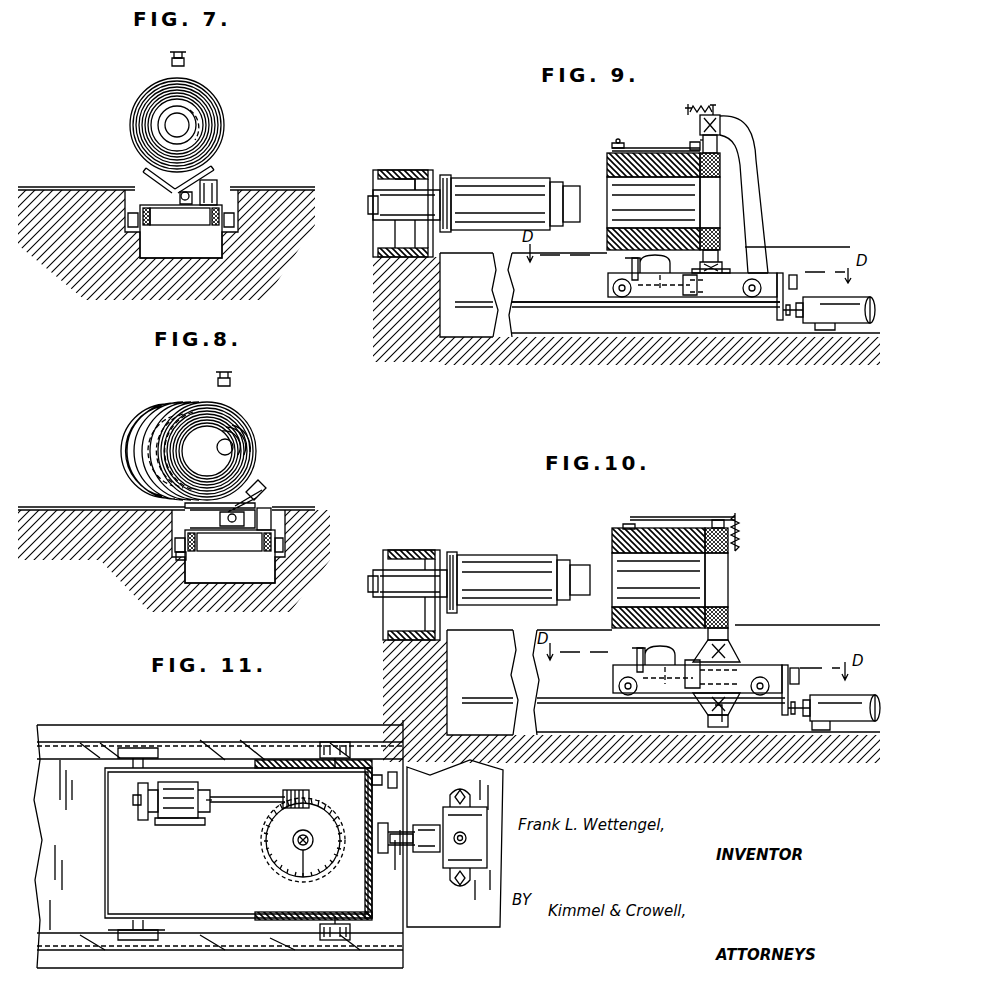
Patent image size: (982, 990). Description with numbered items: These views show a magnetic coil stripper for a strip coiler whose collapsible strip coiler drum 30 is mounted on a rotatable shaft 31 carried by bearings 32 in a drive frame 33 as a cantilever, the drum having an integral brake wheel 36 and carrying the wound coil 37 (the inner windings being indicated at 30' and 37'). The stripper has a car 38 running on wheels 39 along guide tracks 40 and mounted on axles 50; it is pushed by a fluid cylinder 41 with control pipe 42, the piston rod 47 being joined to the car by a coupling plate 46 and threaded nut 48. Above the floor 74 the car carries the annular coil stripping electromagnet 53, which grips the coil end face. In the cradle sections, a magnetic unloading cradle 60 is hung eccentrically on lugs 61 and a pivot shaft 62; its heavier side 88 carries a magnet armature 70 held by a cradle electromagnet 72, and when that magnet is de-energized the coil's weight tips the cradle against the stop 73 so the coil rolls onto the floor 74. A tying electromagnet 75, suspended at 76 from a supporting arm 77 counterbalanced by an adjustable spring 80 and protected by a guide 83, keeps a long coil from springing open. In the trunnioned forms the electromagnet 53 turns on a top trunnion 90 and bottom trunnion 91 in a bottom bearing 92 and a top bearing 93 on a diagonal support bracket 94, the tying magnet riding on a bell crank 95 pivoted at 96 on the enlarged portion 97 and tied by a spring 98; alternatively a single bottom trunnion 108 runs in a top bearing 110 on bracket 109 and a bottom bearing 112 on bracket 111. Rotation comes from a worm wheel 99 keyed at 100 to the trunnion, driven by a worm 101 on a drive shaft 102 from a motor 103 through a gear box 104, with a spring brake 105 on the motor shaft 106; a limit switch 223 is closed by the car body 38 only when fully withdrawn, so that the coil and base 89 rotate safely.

In FIG. 7, the collapsible strip coiler drum 30 is at (211, 130).
In FIG. 8, the collapsible strip coiler drum 30 is at (260, 442).
In FIG. 9, the collapsible strip coiler drum 30 is at (515, 188).
In FIG. 10, the collapsible strip coiler drum 30 is at (523, 570).
In FIG. 7, the inner end of coil 30' is at (229, 125).
In FIG. 9, the rotatable shaft 31 is at (403, 222).
In FIG. 10, the rotatable shaft 31 is at (412, 605).
In FIG. 9, the bearings 32 is at (376, 192).
In FIG. 9, the drive frame 33 is at (425, 173).
In FIG. 10, the drive frame 33 is at (430, 553).
In FIG. 9, the brake wheel 36 is at (446, 176).
In FIG. 10, the brake wheel 36 is at (452, 560).
In FIG. 7, the coil 37 is at (158, 125).
In FIG. 8, the coil 37 is at (166, 449).
In FIG. 9, the coil winding 37' is at (631, 199).
In FIG. 10, the coil winding 37' is at (633, 578).
In FIG. 7, the car 38 is at (183, 222).
In FIG. 8, the car 38 is at (246, 556).
In FIG. 9, the car 38 is at (630, 276).
In FIG. 10, the car 38 is at (613, 675).
In FIG. 11, the car 38 is at (215, 768).
In FIG. 8, the wheels 39 is at (178, 556).
In FIG. 9, the wheels 39 is at (612, 289).
In FIG. 10, the wheels 39 is at (620, 688).
In FIG. 11, the wheels 39 is at (345, 745).
In FIG. 9, the guide tracks 40 is at (530, 306).
In FIG. 11, the guide tracks 40 is at (328, 958).
In FIG. 9, the fluid cylinder 41 is at (812, 300).
In FIG. 10, the fluid cylinder 41 is at (832, 702).
In FIG. 11, the fluid cylinder 41 is at (487, 815).
In FIG. 11, the control pipe 42 is at (466, 840).
In FIG. 11, the coupling plate 46 is at (385, 824).
In FIG. 9, the piston rod 47 is at (792, 315).
In FIG. 10, the piston rod 47 is at (795, 717).
In FIG. 11, the piston rod 47 is at (400, 848).
In FIG. 11, the threaded nut 48 is at (398, 834).
In FIG. 11, the axles 50 is at (350, 934).
In FIG. 9, the coil stripping electromagnet 53 is at (722, 166).
In FIG. 10, the coil stripping electromagnet 53 is at (728, 555).
In FIG. 7, the magnetic unloading cradle 60 is at (176, 195).
In FIG. 8, the lugs 61 is at (226, 548).
In FIG. 7, the pivot shaft 62 is at (181, 197).
In FIG. 7, the magnet armature 70 is at (212, 184).
In FIG. 8, the magnet armature 70 is at (262, 509).
In FIG. 7, the cradle electromagnet 72 is at (220, 196).
In FIG. 8, the cradle electromagnet 72 is at (283, 534).
In FIG. 7, the stop 73 is at (138, 200).
In FIG. 8, the stop 73 is at (195, 522).
In FIG. 7, the floor 74 is at (90, 186).
In FIG. 8, the floor 74 is at (78, 505).
In FIG. 9, the floor 74 is at (500, 252).
In FIG. 7, the tying electromagnet 75 is at (170, 64).
In FIG. 8, the tying electromagnet 75 is at (214, 381).
In FIG. 9, the tying electromagnet 75 is at (616, 143).
In FIG. 10, the tying electromagnet 75 is at (625, 528).
In FIG. 9, the pivotal suspension 76 is at (622, 140).
In FIG. 7, the supporting arm 77 is at (184, 54).
In FIG. 10, the adjustable spring 80 is at (740, 537).
In FIG. 9, the guide 83 is at (614, 150).
In FIG. 8, the side of cradle 88 is at (256, 490).
In FIG. 9, the base platform 89 is at (450, 288).
In FIG. 10, the base platform 89 is at (450, 675).
In FIG. 11, the base platform 89 is at (62, 910).
In FIG. 9, the top trunnion 90 is at (716, 112).
In FIG. 9, the bottom trunnion 91 is at (783, 282).
In FIG. 11, the bottom trunnion 91 is at (296, 848).
In FIG. 9, the bottom bearing 92 is at (722, 262).
In FIG. 9, the top bearing 93 is at (723, 122).
In FIG. 9, the top bearing support bracket 94 is at (758, 152).
In FIG. 9, the bell crank 95 is at (678, 142).
In FIG. 9, the pivot 96 is at (694, 142).
In FIG. 9, the enlarged portion of upper trunnion 97 is at (718, 142).
In FIG. 9, the adjustable spring 98 is at (705, 101).
In FIG. 9, the worm wheel 99 is at (689, 296).
In FIG. 10, the worm wheel 99 is at (694, 660).
In FIG. 11, the worm wheel 99 is at (330, 828).
In FIG. 11, the key 100 is at (312, 850).
In FIG. 11, the worm 101 is at (309, 799).
In FIG. 9, the drive shaft 102 is at (680, 300).
In FIG. 10, the drive shaft 102 is at (660, 706).
In FIG. 11, the drive shaft 102 is at (265, 806).
In FIG. 9, the motor 103 is at (630, 262).
In FIG. 10, the motor 103 is at (635, 660).
In FIG. 11, the motor 103 is at (185, 815).
In FIG. 9, the gear box 104 is at (660, 300).
In FIG. 10, the gear box 104 is at (668, 660).
In FIG. 11, the gear box 104 is at (206, 814).
In FIG. 9, the magnetically operated spring brake 105 is at (700, 262).
In FIG. 10, the magnetically operated spring brake 105 is at (618, 665).
In FIG. 11, the magnetically operated spring brake 105 is at (130, 815).
In FIG. 11, the motor shaft 106 is at (133, 801).
In FIG. 10, the trunnion 108 is at (718, 727).
In FIG. 10, the top bearing bracket 109 is at (736, 656).
In FIG. 10, the top bearing 110 is at (728, 638).
In FIG. 10, the bearing bracket 111 is at (702, 703).
In FIG. 10, the bottom bearing 112 is at (733, 716).
In FIG. 9, the limit switch 223 is at (796, 278).
In FIG. 10, the limit switch 223 is at (798, 668).
In FIG. 11, the limit switch 223 is at (398, 780).